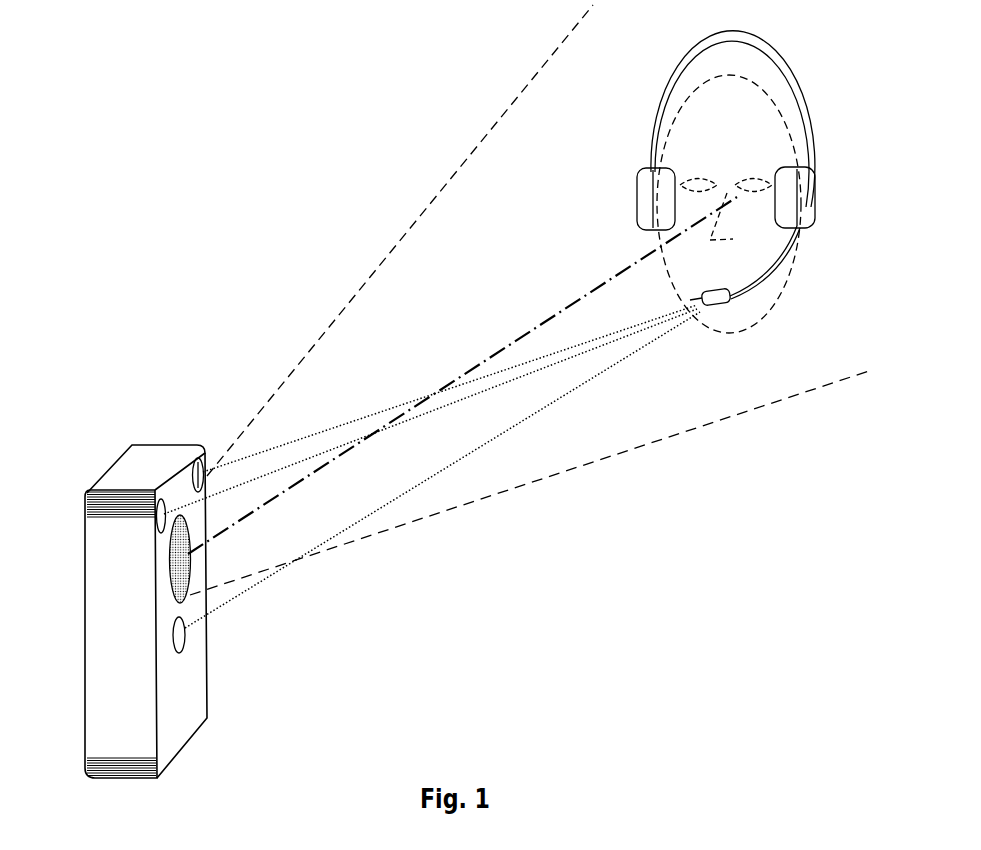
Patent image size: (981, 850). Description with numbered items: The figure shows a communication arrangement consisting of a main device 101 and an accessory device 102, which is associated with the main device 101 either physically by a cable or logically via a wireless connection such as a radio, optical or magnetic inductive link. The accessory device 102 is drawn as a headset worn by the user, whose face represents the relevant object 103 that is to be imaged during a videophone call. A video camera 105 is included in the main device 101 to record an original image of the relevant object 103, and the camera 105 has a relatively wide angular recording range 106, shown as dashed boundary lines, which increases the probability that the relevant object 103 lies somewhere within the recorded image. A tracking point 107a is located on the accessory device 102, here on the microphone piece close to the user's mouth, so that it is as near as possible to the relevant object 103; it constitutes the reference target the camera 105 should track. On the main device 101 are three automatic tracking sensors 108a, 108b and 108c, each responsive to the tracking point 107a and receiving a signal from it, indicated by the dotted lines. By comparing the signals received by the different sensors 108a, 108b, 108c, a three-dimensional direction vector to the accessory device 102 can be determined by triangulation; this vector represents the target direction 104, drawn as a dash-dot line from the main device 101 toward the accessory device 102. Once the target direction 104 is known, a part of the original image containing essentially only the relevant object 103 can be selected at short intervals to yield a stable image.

The main device 101 is at (170, 443).
The accessory device 102 is at (735, 66).
The relevant object 103 is at (675, 120).
The target direction 104 is at (540, 322).
The video camera 105 is at (190, 572).
The angular recording range 106 is at (420, 218).
The tracking point 107a is at (730, 303).
The automatic tracking sensor 108a is at (157, 492).
The automatic tracking sensor 108b is at (203, 483).
The automatic tracking sensor 108c is at (187, 648).